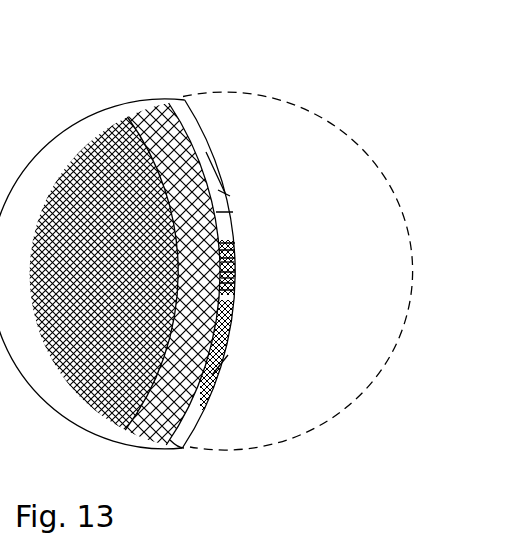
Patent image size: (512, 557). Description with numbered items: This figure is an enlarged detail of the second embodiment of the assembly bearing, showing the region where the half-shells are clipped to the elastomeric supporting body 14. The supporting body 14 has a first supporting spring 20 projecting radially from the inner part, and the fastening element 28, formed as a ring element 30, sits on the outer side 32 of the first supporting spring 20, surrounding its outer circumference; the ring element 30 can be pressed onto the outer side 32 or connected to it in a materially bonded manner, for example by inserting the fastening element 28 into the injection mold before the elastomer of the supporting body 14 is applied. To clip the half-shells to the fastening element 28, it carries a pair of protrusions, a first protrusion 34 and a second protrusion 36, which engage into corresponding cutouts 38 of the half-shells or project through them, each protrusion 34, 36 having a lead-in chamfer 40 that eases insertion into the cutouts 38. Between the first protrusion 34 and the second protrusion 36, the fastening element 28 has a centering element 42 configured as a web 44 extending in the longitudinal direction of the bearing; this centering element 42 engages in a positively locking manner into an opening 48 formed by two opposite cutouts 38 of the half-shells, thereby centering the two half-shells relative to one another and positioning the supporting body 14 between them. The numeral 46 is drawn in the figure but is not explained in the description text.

The supporting body 14 is at (108, 400).
The first supporting spring 20 is at (124, 120).
The fastening element 28 is at (203, 112).
The ring element 30 is at (187, 447).
The outer side 32 is at (158, 108).
The first protrusion 34 is at (218, 192).
The second protrusion 36 is at (232, 326).
The cutout 38 is at (222, 160).
The lead-in chamfer 40 is at (232, 193).
The centering element 42 is at (236, 268).
The web 44 is at (236, 279).
The sub-layer 46 is at (236, 248).
The opening 48 is at (238, 262).